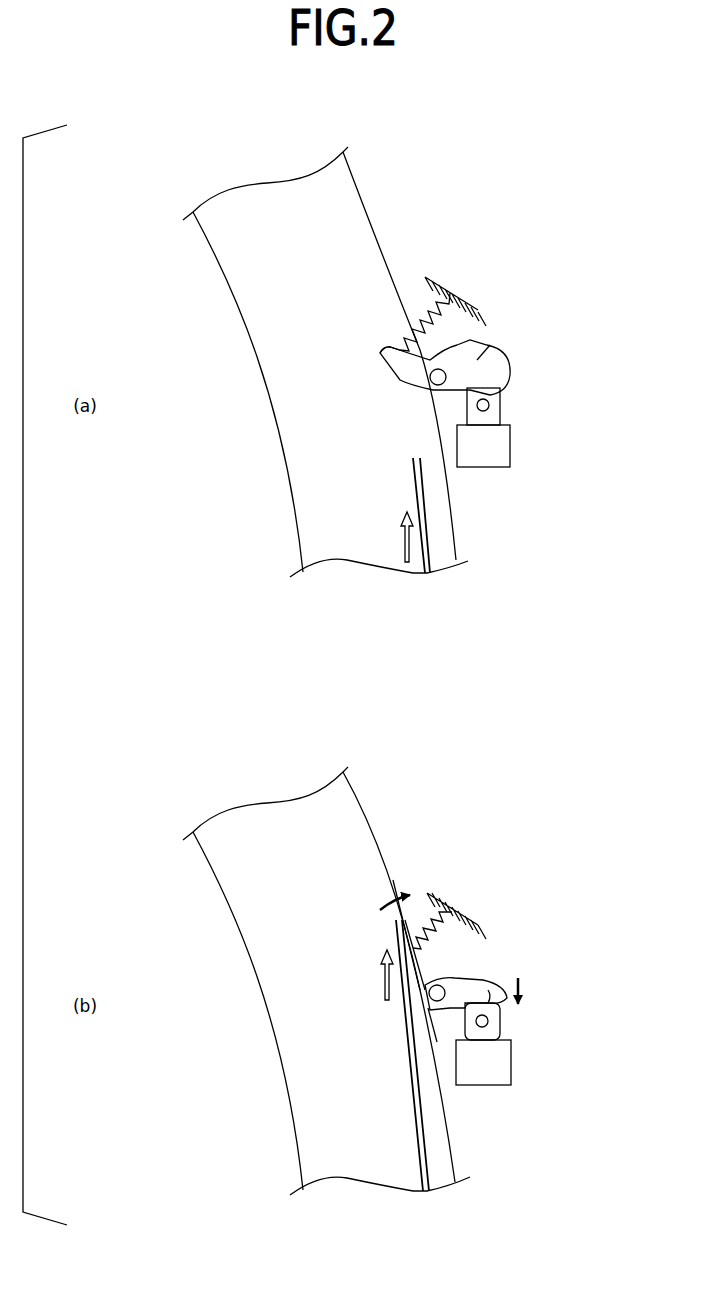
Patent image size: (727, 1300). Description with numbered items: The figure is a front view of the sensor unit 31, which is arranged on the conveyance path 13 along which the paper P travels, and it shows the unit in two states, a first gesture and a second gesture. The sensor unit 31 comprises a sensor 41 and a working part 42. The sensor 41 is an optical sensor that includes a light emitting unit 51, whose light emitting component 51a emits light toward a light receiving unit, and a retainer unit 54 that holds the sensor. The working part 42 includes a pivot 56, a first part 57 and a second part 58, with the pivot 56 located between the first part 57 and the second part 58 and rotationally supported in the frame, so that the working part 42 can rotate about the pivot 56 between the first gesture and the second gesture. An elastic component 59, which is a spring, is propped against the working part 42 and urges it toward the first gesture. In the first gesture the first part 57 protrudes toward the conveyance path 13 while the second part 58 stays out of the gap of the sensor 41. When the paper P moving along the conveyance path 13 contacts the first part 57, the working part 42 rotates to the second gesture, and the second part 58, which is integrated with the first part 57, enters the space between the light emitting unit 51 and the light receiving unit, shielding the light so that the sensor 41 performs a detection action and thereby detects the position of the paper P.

The conveyance path 13 is at (238, 258).
The sensor unit 31 is at (485, 692).
The sensor 41 is at (514, 790).
The working part 42 is at (406, 380).
The light emitting unit 51 is at (519, 710).
The light emitting component 51a is at (500, 398).
The retainer unit 54 is at (502, 445).
The pivot 56 is at (477, 348).
The first part 57 is at (390, 347).
The second part 58 is at (490, 348).
The elastic component 59 is at (430, 353).
The paper P is at (413, 491).